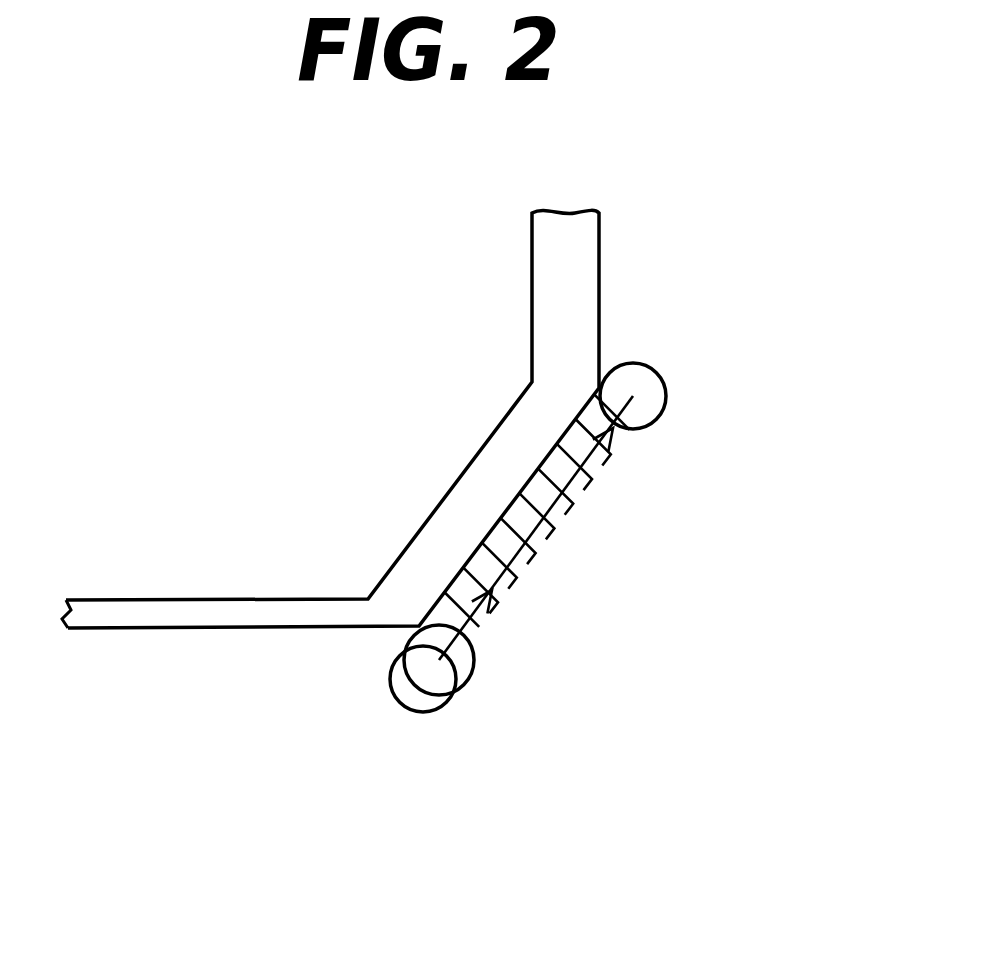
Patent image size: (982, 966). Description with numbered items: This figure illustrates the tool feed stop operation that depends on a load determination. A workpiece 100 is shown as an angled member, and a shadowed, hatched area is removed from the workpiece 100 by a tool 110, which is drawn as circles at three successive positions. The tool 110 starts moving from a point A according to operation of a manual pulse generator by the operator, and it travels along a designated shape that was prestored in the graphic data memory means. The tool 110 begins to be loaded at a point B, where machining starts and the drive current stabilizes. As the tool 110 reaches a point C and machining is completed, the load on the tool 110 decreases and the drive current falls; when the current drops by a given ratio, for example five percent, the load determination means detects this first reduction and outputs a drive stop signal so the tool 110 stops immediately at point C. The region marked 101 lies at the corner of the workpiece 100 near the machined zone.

The workpiece 100 is at (600, 468).
The corner weld region / hatched joint zone 101 is at (442, 600).
The tool 110 is at (663, 382).